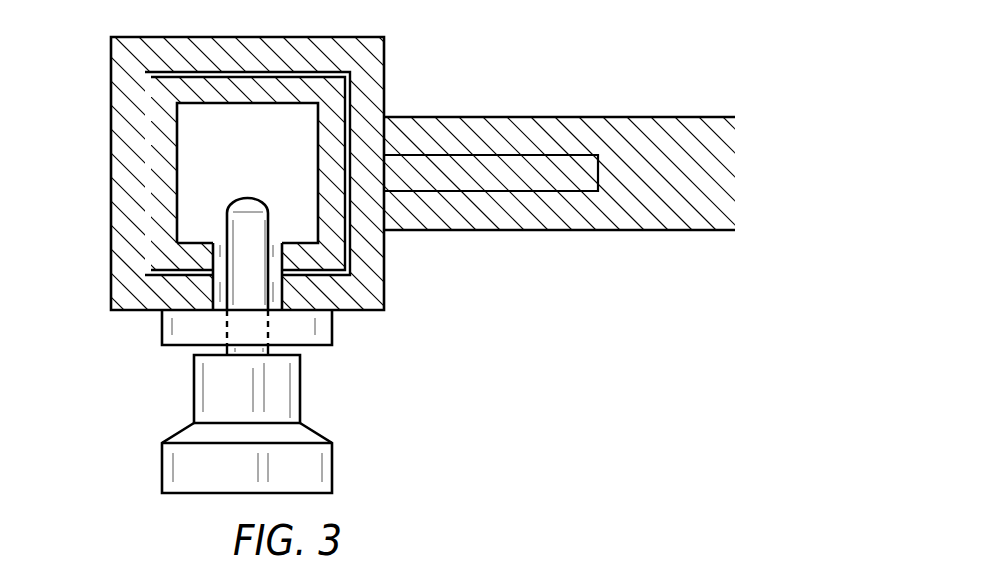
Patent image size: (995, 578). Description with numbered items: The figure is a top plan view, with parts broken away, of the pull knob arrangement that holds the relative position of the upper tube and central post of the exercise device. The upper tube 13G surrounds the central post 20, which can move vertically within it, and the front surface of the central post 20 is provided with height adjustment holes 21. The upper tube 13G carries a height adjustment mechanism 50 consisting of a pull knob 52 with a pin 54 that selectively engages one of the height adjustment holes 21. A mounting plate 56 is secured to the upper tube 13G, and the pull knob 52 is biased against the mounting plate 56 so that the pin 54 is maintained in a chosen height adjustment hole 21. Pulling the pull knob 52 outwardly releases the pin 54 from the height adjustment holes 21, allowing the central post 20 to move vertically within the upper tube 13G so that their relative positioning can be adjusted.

The upper tube 13G is at (112, 64).
The central post 20 is at (147, 113).
The height adjustment holes 21 is at (282, 240).
The pin 54 is at (227, 210).
The mounting plate 56 is at (333, 347).
The height adjustment mechanism 50 is at (193, 393).
The pull knob 52 is at (333, 465).